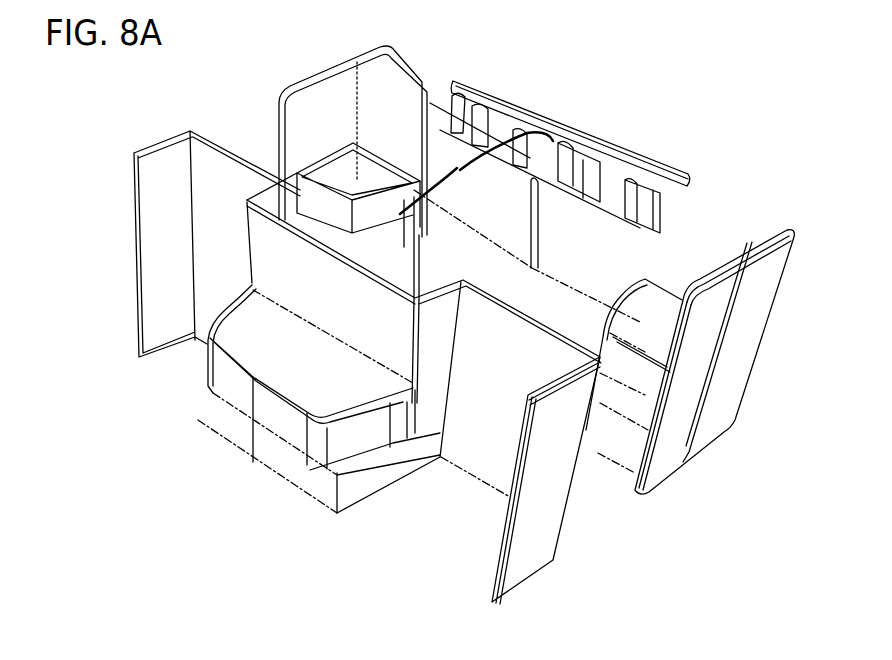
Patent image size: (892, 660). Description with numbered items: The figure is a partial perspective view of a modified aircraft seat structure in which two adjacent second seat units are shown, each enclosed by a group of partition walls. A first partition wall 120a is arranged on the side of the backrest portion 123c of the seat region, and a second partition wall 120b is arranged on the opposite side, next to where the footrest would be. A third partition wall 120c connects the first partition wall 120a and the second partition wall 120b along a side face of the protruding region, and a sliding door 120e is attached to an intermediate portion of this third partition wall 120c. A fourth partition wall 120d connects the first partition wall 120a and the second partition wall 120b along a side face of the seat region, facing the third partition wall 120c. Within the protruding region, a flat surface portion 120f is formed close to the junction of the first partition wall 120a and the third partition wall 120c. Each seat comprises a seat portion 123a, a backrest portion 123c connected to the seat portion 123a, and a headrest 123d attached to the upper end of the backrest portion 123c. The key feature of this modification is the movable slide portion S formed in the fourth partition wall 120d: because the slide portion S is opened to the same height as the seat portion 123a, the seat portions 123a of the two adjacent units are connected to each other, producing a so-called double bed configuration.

The first partition wall 120a is at (494, 96).
The second partition wall 120b is at (473, 457).
The third partition wall 120c is at (336, 64).
The fourth partition wall 120d is at (571, 133).
The sliding door 120e is at (527, 563).
The flat surface portion 120f is at (353, 178).
The seat portion 123a is at (463, 263).
The backrest portion 123c is at (509, 215).
The headrest 123d is at (460, 120).
The movable slide portion S is at (476, 173).